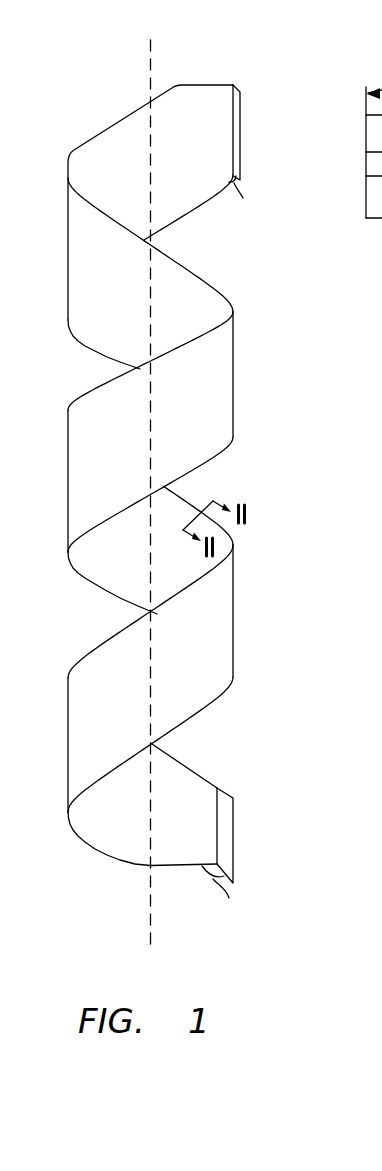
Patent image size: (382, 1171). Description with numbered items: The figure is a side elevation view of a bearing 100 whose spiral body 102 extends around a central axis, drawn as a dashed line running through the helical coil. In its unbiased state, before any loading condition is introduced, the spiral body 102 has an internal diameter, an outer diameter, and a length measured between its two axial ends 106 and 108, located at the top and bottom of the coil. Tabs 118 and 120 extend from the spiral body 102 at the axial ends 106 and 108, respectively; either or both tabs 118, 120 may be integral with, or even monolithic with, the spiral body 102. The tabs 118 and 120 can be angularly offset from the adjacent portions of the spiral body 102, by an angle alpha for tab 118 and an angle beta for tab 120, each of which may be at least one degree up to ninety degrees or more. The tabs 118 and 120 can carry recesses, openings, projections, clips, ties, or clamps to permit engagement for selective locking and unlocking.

The bearing 100 is at (277, 44).
The spiral body 102 is at (235, 630).
The axial end 106 is at (200, 83).
The axial end 108 is at (183, 867).
The tab 118 is at (242, 118).
The tab 120 is at (235, 817).